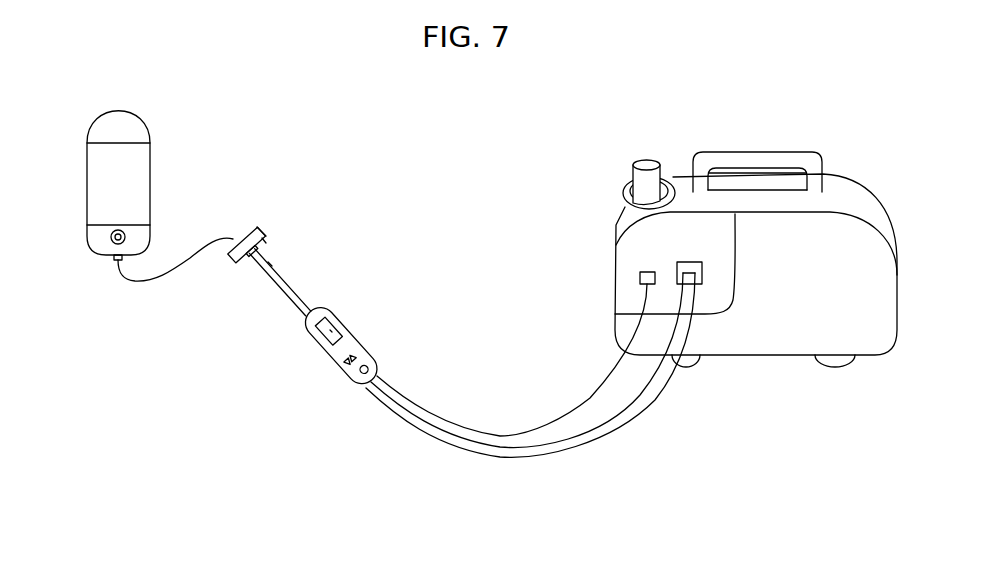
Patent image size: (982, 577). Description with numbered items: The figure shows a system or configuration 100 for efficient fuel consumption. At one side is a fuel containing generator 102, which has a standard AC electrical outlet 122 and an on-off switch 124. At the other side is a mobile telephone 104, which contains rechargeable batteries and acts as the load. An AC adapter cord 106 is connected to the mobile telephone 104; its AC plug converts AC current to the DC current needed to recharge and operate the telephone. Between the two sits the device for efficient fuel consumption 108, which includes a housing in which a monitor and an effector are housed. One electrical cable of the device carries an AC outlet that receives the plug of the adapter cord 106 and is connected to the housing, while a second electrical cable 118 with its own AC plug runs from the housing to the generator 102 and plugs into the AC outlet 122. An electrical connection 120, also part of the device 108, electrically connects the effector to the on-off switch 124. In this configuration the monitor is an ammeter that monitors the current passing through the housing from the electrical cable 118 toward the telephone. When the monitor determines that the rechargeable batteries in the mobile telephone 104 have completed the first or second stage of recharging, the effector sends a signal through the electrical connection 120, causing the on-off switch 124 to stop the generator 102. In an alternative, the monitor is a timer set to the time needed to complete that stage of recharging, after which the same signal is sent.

The system or configuration for efficient fuel consumption 100 is at (181, 96).
The fuel containing generator 102 is at (793, 383).
The mobile telephone 104 is at (83, 253).
The AC adapter cord 106 is at (166, 281).
The device for efficient fuel consumption 108 is at (420, 482).
The electrical cable with AC plug 118 is at (510, 457).
The electrical connection 120 is at (417, 405).
The standard AC electrical outlet 122 is at (703, 265).
The on-off switch 124 is at (640, 274).